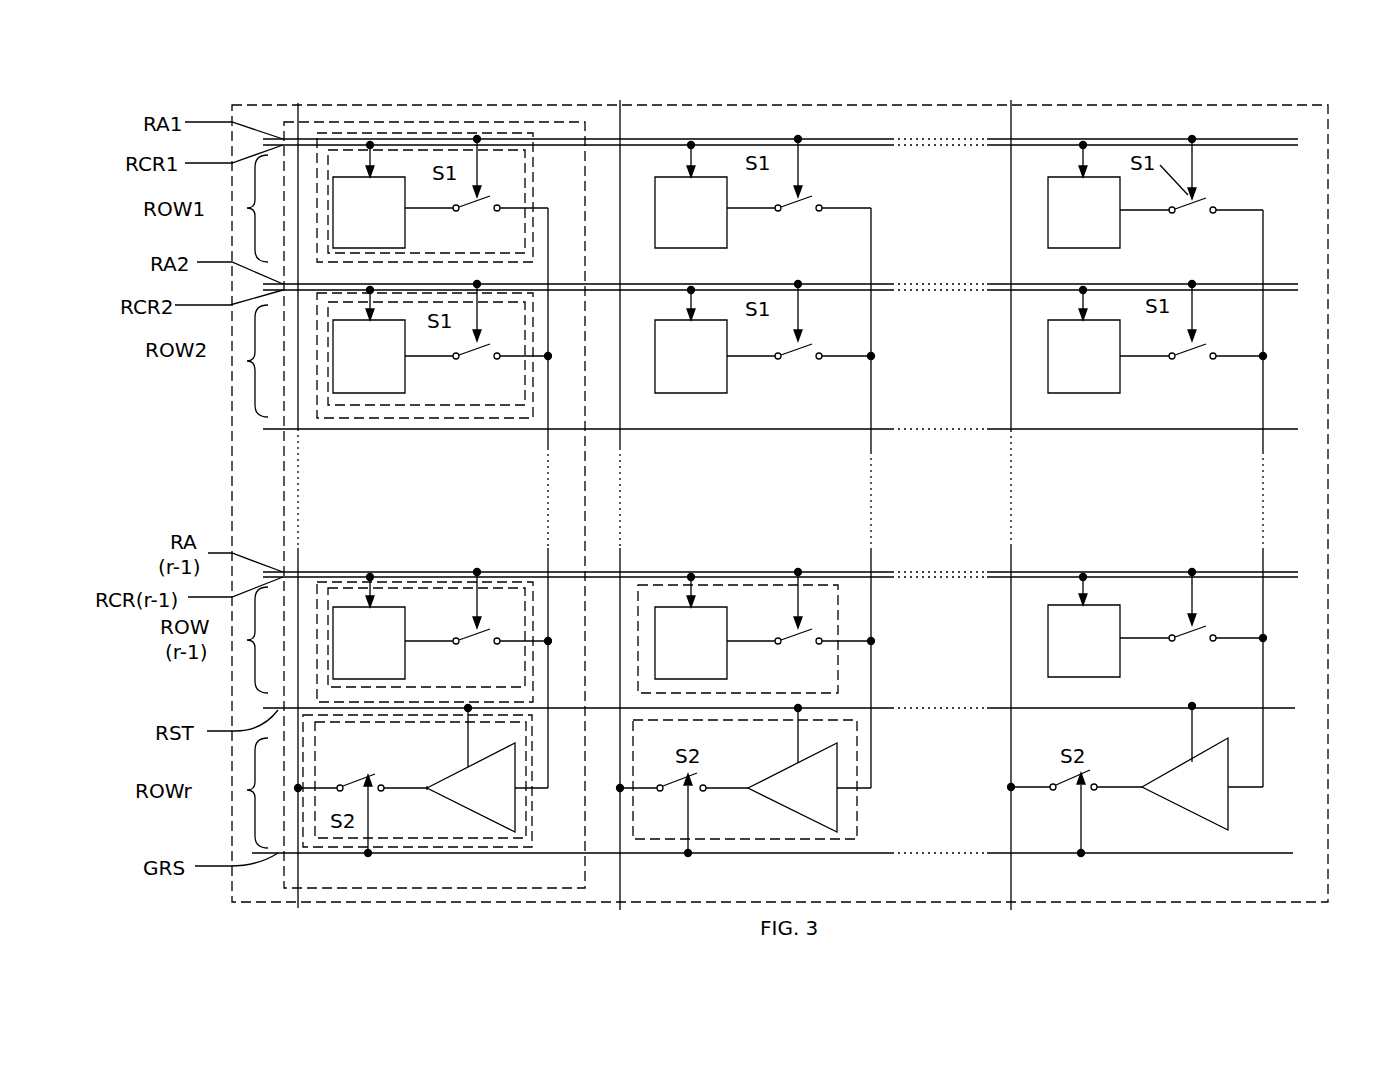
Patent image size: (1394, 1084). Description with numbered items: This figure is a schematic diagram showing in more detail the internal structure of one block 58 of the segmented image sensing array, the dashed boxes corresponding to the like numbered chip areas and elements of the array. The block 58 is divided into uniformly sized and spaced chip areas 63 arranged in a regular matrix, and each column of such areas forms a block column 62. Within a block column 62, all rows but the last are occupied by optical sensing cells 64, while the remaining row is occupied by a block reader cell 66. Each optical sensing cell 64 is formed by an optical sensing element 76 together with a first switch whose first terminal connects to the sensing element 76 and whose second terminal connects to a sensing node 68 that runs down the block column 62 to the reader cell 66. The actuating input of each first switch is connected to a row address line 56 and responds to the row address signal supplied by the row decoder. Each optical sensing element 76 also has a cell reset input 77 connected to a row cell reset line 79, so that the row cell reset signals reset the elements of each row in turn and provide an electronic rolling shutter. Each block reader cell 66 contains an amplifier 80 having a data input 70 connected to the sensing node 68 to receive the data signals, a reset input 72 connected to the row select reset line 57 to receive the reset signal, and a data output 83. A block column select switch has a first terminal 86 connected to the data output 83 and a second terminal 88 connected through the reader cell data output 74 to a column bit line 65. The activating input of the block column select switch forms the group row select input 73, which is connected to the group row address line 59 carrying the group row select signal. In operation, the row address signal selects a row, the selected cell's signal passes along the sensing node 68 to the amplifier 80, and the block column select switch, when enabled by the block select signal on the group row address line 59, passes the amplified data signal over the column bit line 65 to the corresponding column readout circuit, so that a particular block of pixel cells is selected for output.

The row address line 56 is at (868, 137).
The row select reset line 57 is at (275, 708).
The first block 58 is at (1328, 185).
The group row address line 59 is at (279, 858).
The block column 62 is at (435, 122).
The chip area 63 is at (505, 133).
The optical sensing cell 64 is at (528, 210).
The column bit line 65 is at (298, 885).
The block reader cell 66 is at (528, 825).
The sensing node 68 is at (548, 442).
The data input 70 is at (530, 790).
The reset input 72 is at (468, 718).
The group row select input 73 is at (370, 830).
The data output 74 is at (315, 782).
The optical sensing element 76 is at (382, 224).
The cell reset input 77 is at (377, 171).
The row cell reset line 79 is at (868, 148).
The amplifier 80 is at (500, 800).
The data output 83 is at (427, 790).
The first terminal 86 is at (382, 788).
The second terminal 88 is at (345, 784).